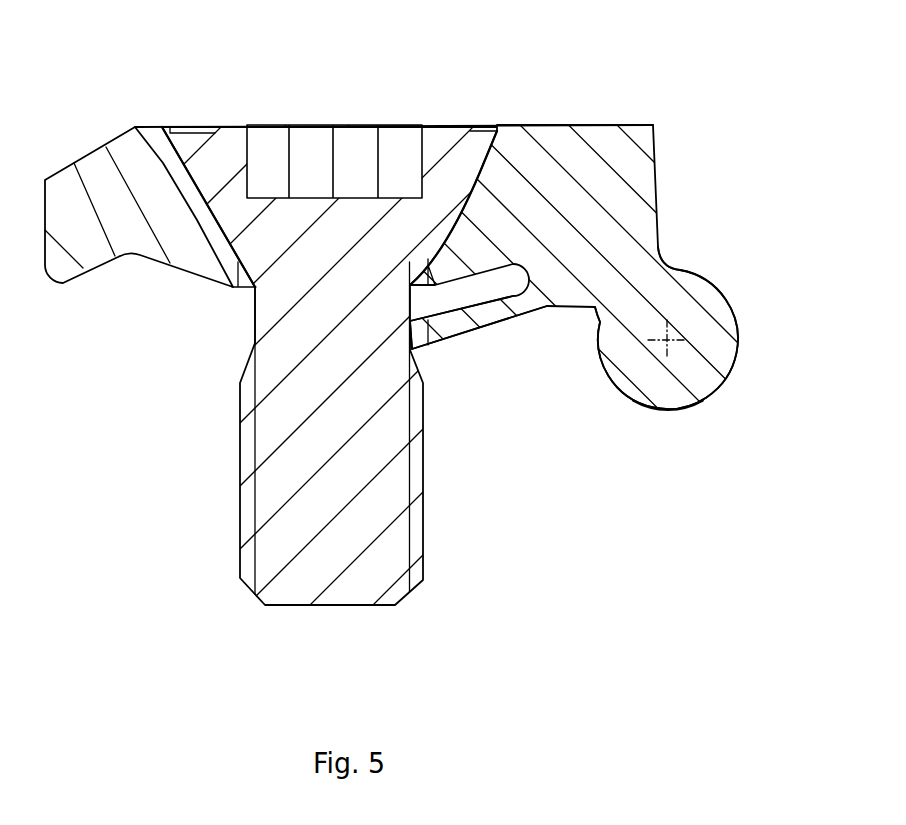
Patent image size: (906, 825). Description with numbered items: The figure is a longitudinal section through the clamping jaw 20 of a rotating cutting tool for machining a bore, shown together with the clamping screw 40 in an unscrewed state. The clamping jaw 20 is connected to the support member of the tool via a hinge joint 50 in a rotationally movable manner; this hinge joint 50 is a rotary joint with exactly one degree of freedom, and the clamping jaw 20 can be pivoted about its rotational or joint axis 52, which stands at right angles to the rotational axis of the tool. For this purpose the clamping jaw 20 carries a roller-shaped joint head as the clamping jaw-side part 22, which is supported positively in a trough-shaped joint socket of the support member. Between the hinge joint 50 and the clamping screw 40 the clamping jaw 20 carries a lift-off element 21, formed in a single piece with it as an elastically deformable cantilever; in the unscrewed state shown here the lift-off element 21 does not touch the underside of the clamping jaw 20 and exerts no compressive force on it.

The clamping jaw 20 is at (563, 145).
The lift-off element 21 is at (462, 323).
The clamping jaw-side part 22 is at (663, 388).
The clamping screw 40 is at (433, 145).
The hinge joint 50 is at (707, 279).
The joint axis 52 is at (668, 340).